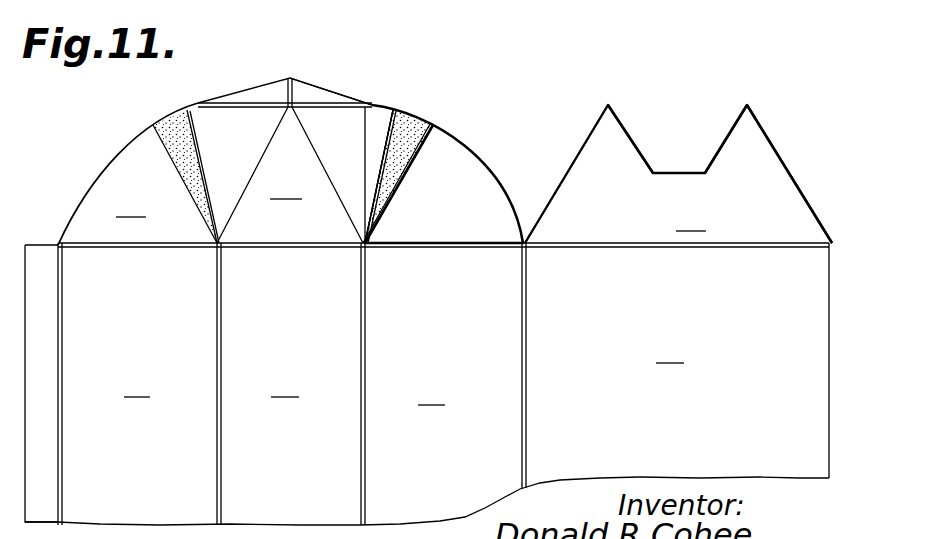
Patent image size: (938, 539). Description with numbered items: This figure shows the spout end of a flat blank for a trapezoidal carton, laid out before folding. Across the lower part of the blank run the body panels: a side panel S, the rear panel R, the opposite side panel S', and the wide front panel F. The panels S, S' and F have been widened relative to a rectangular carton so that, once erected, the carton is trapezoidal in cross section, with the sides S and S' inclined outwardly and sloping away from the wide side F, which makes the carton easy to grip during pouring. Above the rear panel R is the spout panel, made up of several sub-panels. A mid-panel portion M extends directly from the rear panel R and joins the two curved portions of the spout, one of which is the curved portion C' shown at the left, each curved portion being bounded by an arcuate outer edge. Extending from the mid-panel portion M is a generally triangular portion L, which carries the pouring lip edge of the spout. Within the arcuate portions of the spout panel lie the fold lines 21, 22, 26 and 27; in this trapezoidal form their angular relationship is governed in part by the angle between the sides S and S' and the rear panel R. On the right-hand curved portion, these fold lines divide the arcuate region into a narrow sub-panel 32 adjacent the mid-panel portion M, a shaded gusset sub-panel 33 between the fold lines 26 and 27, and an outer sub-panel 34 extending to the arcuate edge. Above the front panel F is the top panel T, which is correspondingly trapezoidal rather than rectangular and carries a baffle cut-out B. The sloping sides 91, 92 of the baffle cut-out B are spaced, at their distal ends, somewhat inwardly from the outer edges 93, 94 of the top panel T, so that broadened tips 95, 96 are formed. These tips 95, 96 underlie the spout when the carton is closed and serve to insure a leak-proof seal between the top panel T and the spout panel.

The fold line 21 is at (167, 147).
The fold line 22 is at (191, 122).
The fold line 26 is at (391, 112).
The fold line 27 is at (425, 146).
The narrow triangular panel 32 is at (386, 132).
The triangular gusset panel 33 is at (414, 149).
The corner panel 34 is at (454, 199).
The sloping side of baffle cut-out 91 is at (624, 121).
The sloping side of baffle cut-out 92 is at (727, 118).
The edge of top panel 93 is at (782, 158).
The edge of top panel 94 is at (566, 169).
The broadened tip 95 is at (606, 116).
The broadened tip 96 is at (744, 116).
The triangular portion L is at (316, 96).
The baffle cut-out B is at (683, 128).
The top panel T is at (678, 174).
The front panel F is at (734, 360).
The side panel S is at (427, 384).
The side panel S' is at (472, 366).
The rear panel R is at (455, 384).
The mid-panel portion M is at (285, 160).
The curved portion C' is at (128, 174).